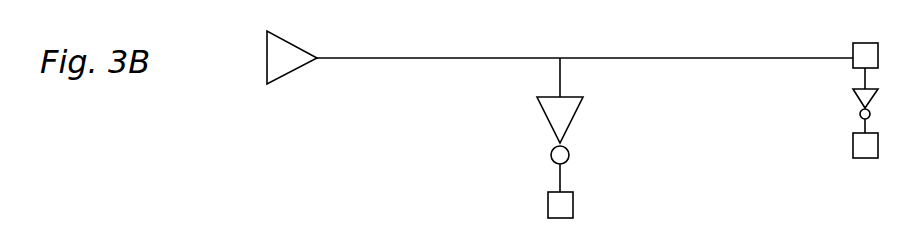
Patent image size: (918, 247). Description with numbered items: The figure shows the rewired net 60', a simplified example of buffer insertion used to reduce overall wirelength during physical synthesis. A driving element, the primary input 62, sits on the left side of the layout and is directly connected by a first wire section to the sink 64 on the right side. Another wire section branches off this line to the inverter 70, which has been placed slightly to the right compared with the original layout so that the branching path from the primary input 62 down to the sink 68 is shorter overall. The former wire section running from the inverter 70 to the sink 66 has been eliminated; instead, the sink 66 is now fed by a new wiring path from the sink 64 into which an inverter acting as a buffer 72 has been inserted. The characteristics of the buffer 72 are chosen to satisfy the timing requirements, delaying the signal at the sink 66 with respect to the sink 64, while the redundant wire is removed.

The net 60' is at (357, 186).
The primary input 62 is at (297, 43).
The sink 64 is at (853, 45).
The sink 66 is at (853, 145).
The sink 68 is at (573, 205).
The inverter 70 is at (574, 124).
The inverter (buffer) 72 is at (854, 93).